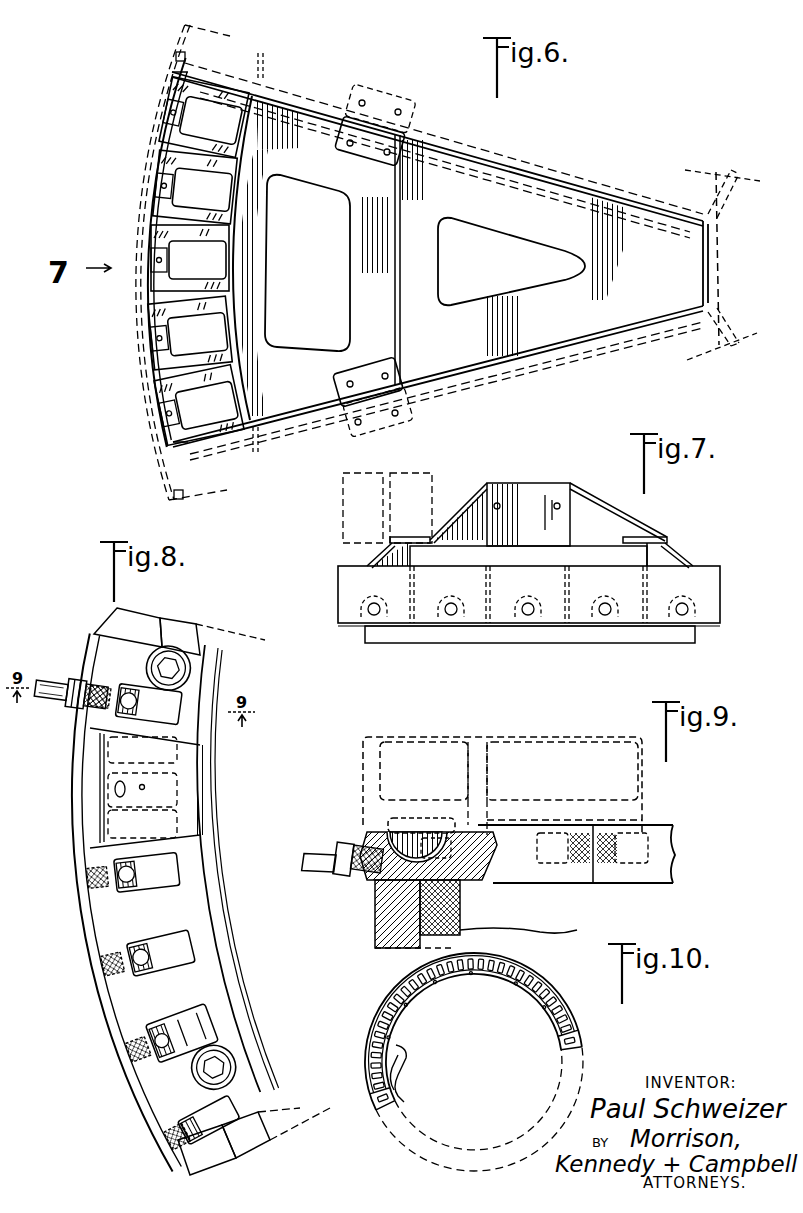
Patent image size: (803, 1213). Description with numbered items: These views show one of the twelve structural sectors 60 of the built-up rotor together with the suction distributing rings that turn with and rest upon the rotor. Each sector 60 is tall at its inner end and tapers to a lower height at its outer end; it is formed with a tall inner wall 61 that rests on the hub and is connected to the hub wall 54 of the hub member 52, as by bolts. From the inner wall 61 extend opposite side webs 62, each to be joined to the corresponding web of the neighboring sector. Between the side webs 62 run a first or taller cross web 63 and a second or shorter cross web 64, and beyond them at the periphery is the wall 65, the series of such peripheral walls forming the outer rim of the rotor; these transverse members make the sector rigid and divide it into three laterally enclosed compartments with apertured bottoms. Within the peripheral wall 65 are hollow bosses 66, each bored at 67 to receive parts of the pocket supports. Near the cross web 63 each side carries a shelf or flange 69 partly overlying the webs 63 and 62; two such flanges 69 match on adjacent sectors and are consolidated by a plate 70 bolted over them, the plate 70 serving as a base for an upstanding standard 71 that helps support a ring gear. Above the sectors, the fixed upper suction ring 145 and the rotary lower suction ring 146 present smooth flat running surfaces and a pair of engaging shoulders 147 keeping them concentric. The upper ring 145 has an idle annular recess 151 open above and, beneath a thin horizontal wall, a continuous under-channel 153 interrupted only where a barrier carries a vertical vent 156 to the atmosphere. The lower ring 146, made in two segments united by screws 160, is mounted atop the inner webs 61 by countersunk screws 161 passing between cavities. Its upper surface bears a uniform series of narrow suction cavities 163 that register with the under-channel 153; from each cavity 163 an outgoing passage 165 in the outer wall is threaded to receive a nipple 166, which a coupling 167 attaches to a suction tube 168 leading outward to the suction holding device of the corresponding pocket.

In FIG. 6, the hub member 52 is at (752, 278).
In FIG. 9, the hub member 52 is at (556, 915).
In FIG. 6, the hub wall 54 is at (719, 246).
In FIG. 8, the hub wall 54 is at (190, 630).
In FIG. 9, the hub wall 54 is at (463, 922).
In FIG. 6, the sector 60 is at (598, 136).
In FIG. 7, the sector 60 is at (552, 448).
In FIG. 6, the inner wall 61 is at (714, 186).
In FIG. 7, the inner wall 61 is at (524, 492).
In FIG. 8, the inner wall 61 is at (116, 616).
In FIG. 9, the inner wall 61 is at (375, 936).
In FIG. 6, the side web 62 is at (456, 147).
In FIG. 7, the side web 62 is at (448, 515).
In FIG. 6, the first cross web 63 is at (400, 240).
In FIG. 7, the first cross web 63 is at (522, 556).
In FIG. 6, the second cross web 64 is at (235, 258).
In FIG. 7, the second cross web 64 is at (418, 648).
In FIG. 6, the peripheral wall 65 is at (158, 144).
In FIG. 7, the peripheral wall 65 is at (672, 623).
In FIG. 6, the boss 66 is at (158, 183).
In FIG. 7, the boss 66 is at (536, 620).
In FIG. 6, the bore 67 is at (155, 252).
In FIG. 7, the bore 67 is at (453, 620).
In FIG. 6, the shelf or flange 69 is at (385, 98).
In FIG. 7, the shelf or flange 69 is at (455, 515).
In FIG. 7, the plate 70 is at (345, 530).
In FIG. 7, the standard 71 is at (345, 494).
In FIG. 8, the upper suction ring 145 is at (205, 770).
In FIG. 9, the upper suction ring 145 is at (571, 729).
In FIG. 8, the lower suction ring 146 is at (73, 904).
In FIG. 9, the lower suction ring 146 is at (676, 856).
In FIG. 10, the lower suction ring 146 is at (492, 1002).
In FIG. 9, the engaging shoulder 147 is at (486, 852).
In FIG. 9, the annular recess 151 is at (432, 742).
In FIG. 9, the under-channel 153 is at (412, 818).
In FIG. 8, the vent 156 is at (145, 789).
In FIG. 8, the screw 160 is at (160, 950).
In FIG. 9, the screw 160 is at (602, 866).
In FIG. 8, the countersunk screw 161 is at (190, 672).
In FIG. 9, the countersunk screw 161 is at (462, 902).
In FIG. 10, the countersunk screw 161 is at (420, 998).
In FIG. 8, the suction cavity 163 is at (130, 690).
In FIG. 9, the suction cavity 163 is at (376, 905).
In FIG. 10, the suction cavity 163 is at (400, 1062).
In FIG. 8, the outgoing passage 165 is at (150, 700).
In FIG. 9, the outgoing passage 165 is at (378, 826).
In FIG. 8, the nipple 166 is at (90, 684).
In FIG. 9, the nipple 166 is at (365, 878).
In FIG. 8, the coupling 167 is at (66, 682).
In FIG. 9, the coupling 167 is at (337, 846).
In FIG. 8, the suction tube 168 is at (44, 706).
In FIG. 9, the suction tube 168 is at (310, 852).